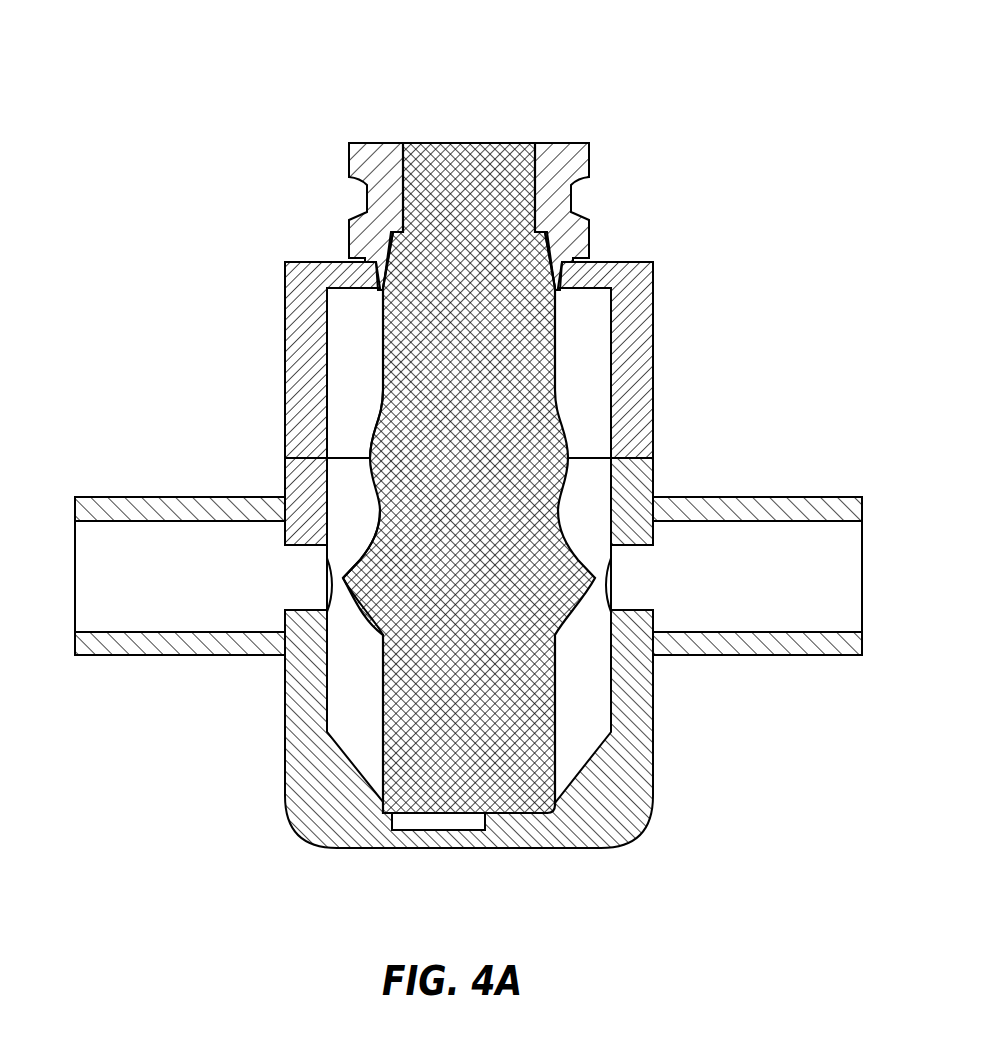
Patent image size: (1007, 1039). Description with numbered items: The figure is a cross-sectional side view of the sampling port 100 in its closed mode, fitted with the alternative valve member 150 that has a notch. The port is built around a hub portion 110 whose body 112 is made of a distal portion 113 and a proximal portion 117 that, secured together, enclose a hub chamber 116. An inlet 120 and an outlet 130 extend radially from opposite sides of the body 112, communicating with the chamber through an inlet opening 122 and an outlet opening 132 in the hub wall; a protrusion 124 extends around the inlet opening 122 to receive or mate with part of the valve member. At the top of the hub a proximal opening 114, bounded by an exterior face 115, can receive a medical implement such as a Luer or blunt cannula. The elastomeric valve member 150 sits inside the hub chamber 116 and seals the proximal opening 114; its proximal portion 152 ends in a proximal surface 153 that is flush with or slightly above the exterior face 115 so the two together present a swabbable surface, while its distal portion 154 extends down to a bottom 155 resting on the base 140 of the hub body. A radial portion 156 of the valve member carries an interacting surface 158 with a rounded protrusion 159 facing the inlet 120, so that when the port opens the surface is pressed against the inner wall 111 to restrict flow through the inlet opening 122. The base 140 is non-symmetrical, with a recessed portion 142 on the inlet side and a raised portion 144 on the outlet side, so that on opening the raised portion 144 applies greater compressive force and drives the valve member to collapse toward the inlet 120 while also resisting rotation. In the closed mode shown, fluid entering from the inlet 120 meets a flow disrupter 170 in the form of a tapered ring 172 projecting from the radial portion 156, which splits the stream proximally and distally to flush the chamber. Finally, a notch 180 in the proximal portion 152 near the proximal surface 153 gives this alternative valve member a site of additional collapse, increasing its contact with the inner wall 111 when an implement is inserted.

The sampling port 100 is at (258, 96).
The hub portion 110 is at (258, 308).
The inner wall 111 is at (345, 418).
The body 112 is at (312, 700).
The distal portion 113 is at (637, 700).
The proximal opening 114 is at (542, 143).
The exterior face 115 is at (565, 143).
The hub chamber 116 is at (582, 347).
The proximal portion 117 is at (653, 302).
The inlet 120 is at (100, 497).
The inlet opening 122 is at (305, 595).
The protrusion 124 is at (333, 567).
The outlet 130 is at (823, 497).
The outlet opening 132 is at (625, 582).
The base 140 is at (503, 820).
The recessed portion 142 is at (445, 826).
The raised portion 144 is at (522, 822).
The valve member 150 is at (433, 697).
The proximal portion 152 is at (438, 205).
The proximal surface 153 is at (427, 143).
The distal portion 154 is at (470, 407).
The bottom 155 is at (398, 790).
The radial portion 156 is at (380, 335).
The interacting surface 158 is at (380, 412).
The rounded protrusion 159 is at (370, 453).
The flow disrupter 170 is at (378, 592).
The tapered ring 172 is at (353, 580).
The notch 180 is at (515, 188).